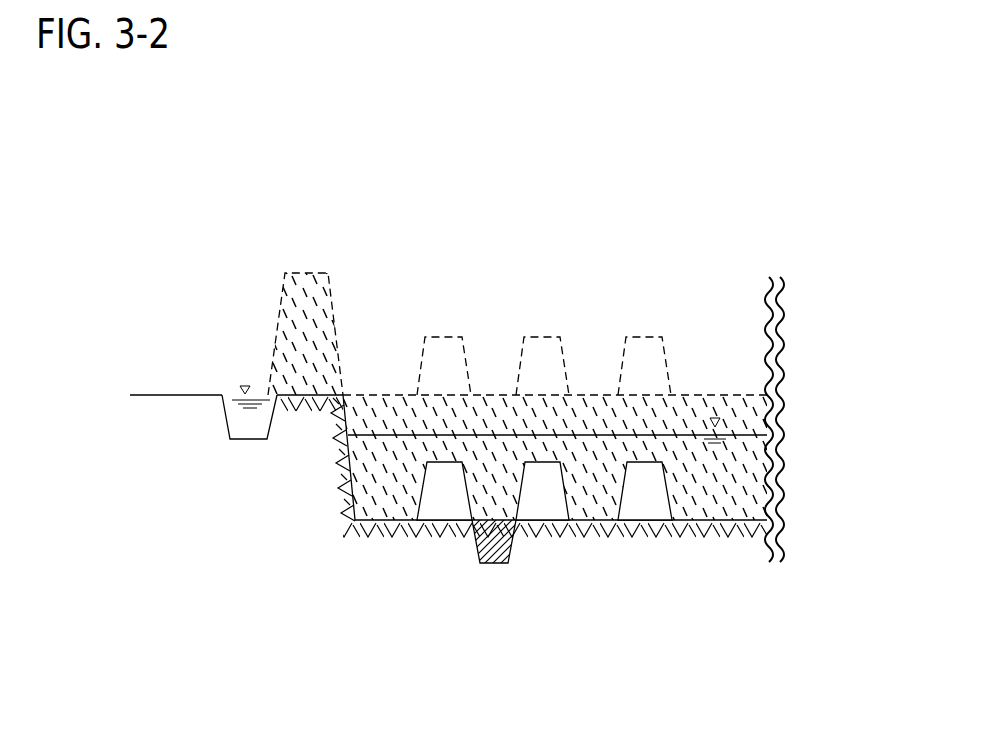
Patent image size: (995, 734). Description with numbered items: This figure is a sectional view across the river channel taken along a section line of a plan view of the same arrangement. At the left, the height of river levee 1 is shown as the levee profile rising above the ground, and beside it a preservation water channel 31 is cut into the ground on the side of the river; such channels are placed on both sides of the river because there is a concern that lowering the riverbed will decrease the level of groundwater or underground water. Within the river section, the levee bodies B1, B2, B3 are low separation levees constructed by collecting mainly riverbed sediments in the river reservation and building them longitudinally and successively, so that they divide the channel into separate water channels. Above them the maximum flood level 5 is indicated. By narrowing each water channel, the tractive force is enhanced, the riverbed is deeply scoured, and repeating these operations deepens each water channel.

The height of river levee 1 is at (300, 352).
The preservation water channel 31 is at (247, 423).
The maximum flood level 5 is at (565, 435).
The levee body B1 is at (445, 505).
The levee body B2 is at (543, 500).
The levee body B3 is at (643, 500).